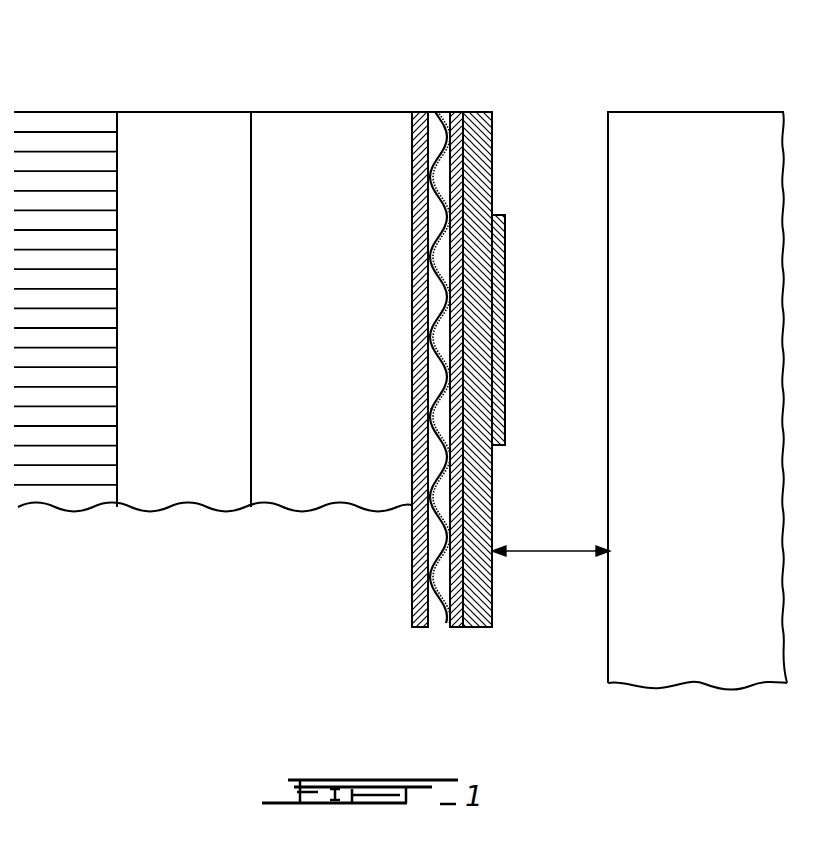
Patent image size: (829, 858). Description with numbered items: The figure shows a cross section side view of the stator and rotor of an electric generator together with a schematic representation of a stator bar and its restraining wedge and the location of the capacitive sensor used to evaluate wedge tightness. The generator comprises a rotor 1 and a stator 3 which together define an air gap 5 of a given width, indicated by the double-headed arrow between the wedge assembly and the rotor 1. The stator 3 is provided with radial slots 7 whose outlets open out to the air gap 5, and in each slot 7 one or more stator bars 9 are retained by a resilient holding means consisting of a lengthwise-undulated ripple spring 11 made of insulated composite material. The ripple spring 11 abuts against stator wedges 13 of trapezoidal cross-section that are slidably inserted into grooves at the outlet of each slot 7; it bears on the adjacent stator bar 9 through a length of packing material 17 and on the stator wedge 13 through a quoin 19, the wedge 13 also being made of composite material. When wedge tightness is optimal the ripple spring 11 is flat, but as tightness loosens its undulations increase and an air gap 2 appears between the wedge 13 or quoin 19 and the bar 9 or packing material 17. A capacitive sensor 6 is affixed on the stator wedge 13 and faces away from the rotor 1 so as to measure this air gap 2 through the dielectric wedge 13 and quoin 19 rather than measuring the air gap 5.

The rotor 1 is at (692, 214).
The air gap 2 is at (440, 624).
The stator 3 is at (51, 127).
The air gap 5 is at (551, 539).
The capacitive sensor 6 is at (500, 262).
The radial slot 7 is at (118, 141).
The stator bar 9 is at (193, 137).
The ripple spring 11 is at (443, 205).
The stator wedge 13 is at (473, 629).
The packing material 17 is at (414, 625).
The quoin 19 is at (474, 110).